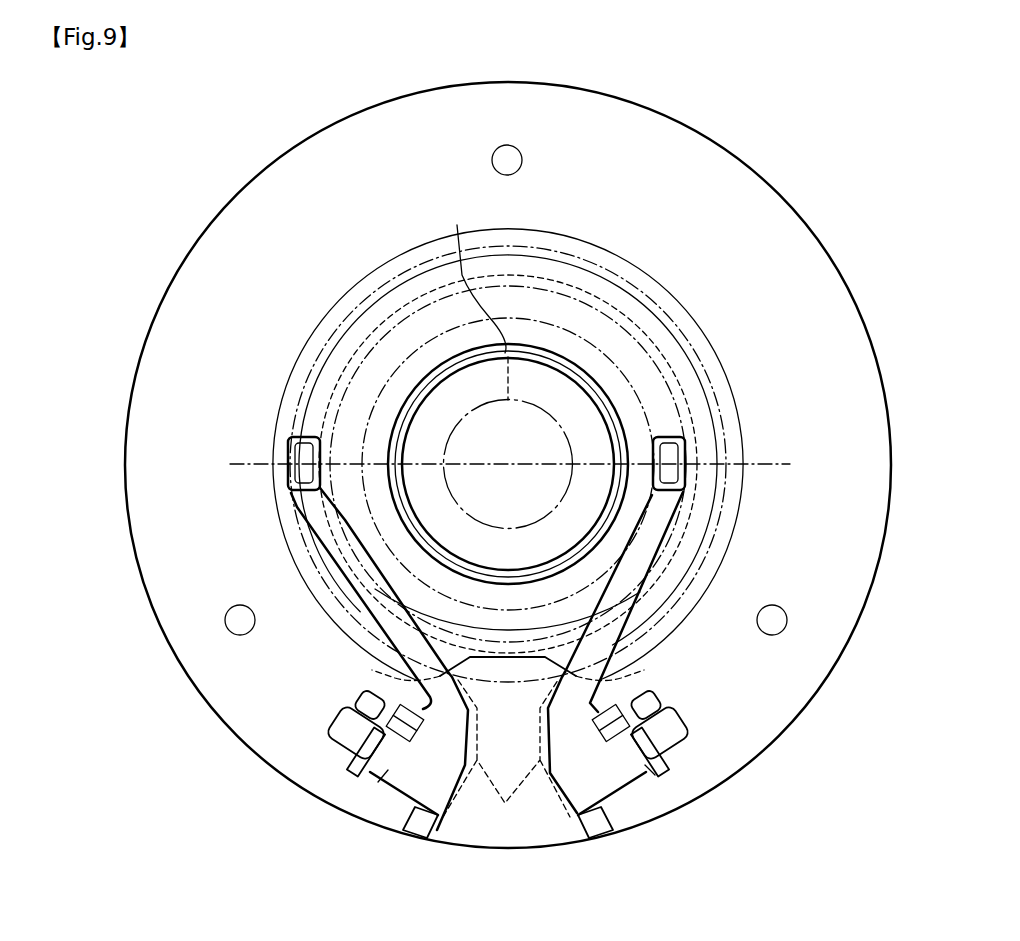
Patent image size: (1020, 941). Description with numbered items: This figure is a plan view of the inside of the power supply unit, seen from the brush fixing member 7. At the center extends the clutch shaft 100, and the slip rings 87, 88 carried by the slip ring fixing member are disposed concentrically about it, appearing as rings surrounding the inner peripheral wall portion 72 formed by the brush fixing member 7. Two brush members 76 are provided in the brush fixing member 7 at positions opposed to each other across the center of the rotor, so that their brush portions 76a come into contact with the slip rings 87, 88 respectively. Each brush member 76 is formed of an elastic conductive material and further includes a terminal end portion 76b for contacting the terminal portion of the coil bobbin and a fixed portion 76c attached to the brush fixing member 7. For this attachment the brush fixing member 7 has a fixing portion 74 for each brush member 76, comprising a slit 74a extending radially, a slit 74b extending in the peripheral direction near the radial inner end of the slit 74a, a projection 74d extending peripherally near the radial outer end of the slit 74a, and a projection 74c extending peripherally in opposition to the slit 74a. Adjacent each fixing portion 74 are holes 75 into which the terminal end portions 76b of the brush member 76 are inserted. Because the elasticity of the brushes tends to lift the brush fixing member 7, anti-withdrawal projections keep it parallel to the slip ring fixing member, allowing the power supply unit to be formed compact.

The brush fixing member 7 is at (248, 180).
The inner peripheral wall portion 72 is at (560, 353).
The fixing portion 74 is at (388, 805).
The slit 74a is at (508, 746).
The slit 74b is at (510, 697).
The projection 74c is at (345, 770).
The projection 74d is at (425, 817).
The holes 75 is at (335, 738).
The brush member 76 is at (330, 567).
The brush portion 76a is at (298, 455).
The terminal end portion 76b is at (355, 703).
The fixed portion 76c is at (378, 782).
The slip ring 87 is at (640, 348).
The slip ring 88 is at (322, 345).
The clutch shaft 100 is at (507, 411).